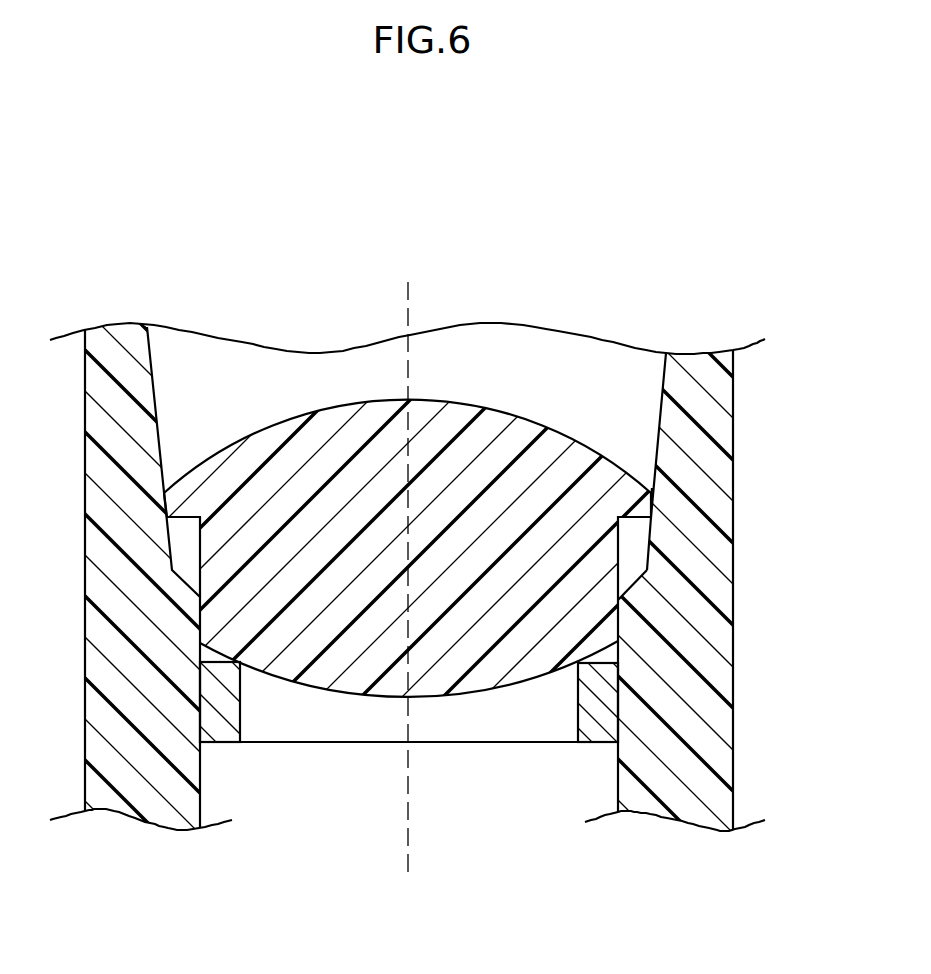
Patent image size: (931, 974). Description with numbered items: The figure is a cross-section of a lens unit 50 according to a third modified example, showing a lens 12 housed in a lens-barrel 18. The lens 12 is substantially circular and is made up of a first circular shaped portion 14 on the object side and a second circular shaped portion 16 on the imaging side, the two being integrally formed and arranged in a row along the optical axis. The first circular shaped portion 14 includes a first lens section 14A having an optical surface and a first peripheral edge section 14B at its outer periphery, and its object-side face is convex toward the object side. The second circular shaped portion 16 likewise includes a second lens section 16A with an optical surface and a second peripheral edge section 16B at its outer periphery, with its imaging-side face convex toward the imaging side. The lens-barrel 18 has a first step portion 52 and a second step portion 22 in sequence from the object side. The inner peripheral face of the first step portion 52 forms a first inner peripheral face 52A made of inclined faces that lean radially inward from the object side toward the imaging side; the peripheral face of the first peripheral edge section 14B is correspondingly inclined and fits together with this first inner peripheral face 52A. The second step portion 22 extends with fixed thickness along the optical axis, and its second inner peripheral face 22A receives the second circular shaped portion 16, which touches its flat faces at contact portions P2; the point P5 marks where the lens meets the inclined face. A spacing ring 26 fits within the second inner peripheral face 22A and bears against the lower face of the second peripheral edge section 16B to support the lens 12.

The lens 12 is at (285, 403).
The first circular shaped portion 14 is at (500, 410).
The first lens section 14A is at (383, 398).
The first peripheral edge section 14B is at (612, 478).
The second circular shaped portion 16 is at (480, 695).
The second lens section 16A is at (347, 697).
The second peripheral edge section 16B is at (602, 641).
The lens-barrel 18 is at (712, 343).
The second step portion 22 is at (737, 682).
The second inner peripheral face 22A is at (618, 785).
The spacing ring 26 is at (295, 745).
The lens unit 50 is at (624, 258).
The first step portion 52 is at (736, 438).
The first inner peripheral face 52A is at (648, 400).
The contact portion P2 is at (618, 623).
The fifth contact point P5 is at (653, 498).